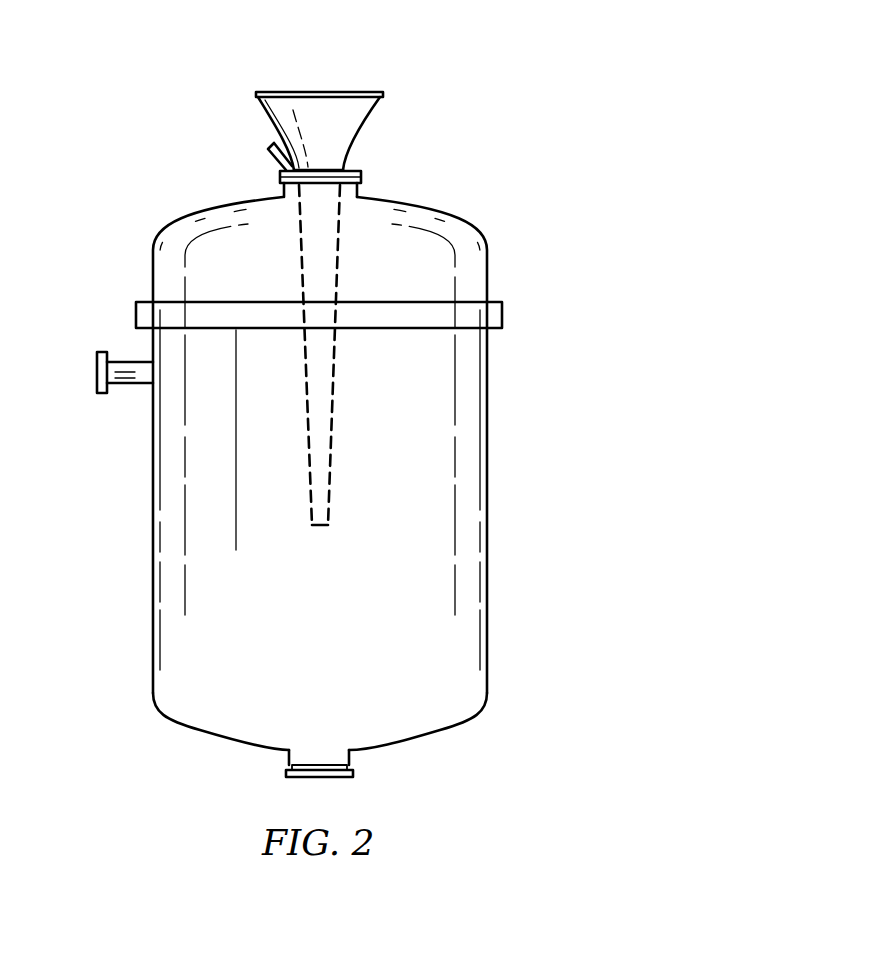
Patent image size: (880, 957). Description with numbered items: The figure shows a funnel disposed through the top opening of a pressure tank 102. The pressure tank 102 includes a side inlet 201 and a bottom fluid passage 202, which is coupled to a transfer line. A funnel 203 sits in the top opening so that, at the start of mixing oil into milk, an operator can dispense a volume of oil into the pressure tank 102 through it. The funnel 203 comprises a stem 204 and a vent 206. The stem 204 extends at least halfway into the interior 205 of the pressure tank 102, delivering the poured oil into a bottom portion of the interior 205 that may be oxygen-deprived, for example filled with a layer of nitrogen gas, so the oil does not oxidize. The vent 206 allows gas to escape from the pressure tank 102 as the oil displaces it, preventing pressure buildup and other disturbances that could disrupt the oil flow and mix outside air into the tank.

The pressure tank 102 is at (481, 56).
The side inlet 201 is at (97, 352).
The bottom fluid passage 202 is at (340, 777).
The funnel 203 is at (372, 110).
The stem 204 is at (333, 412).
The interior 205 is at (335, 652).
The vent 206 is at (273, 146).